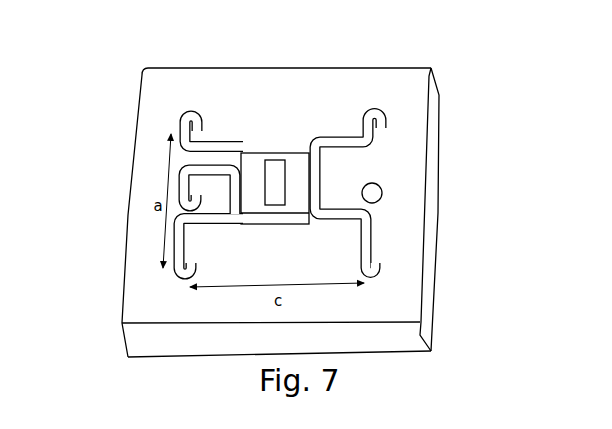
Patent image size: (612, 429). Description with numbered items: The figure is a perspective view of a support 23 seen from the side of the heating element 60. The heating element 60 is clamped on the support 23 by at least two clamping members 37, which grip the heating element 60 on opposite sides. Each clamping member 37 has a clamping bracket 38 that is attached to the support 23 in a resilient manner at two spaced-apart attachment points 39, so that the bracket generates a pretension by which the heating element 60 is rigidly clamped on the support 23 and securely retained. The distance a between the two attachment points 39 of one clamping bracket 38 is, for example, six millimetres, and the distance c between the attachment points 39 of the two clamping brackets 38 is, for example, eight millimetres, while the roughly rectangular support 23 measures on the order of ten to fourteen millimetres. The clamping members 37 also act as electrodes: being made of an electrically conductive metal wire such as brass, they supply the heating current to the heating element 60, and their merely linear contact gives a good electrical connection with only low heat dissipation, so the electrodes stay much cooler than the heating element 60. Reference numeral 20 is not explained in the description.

The spring clip 20 is at (276, 183).
The support 23 is at (432, 276).
The clamping member 37 is at (213, 128).
The clamping bracket 38 is at (371, 126).
The attachment point 39 is at (182, 125).
The heating element 60 is at (268, 184).